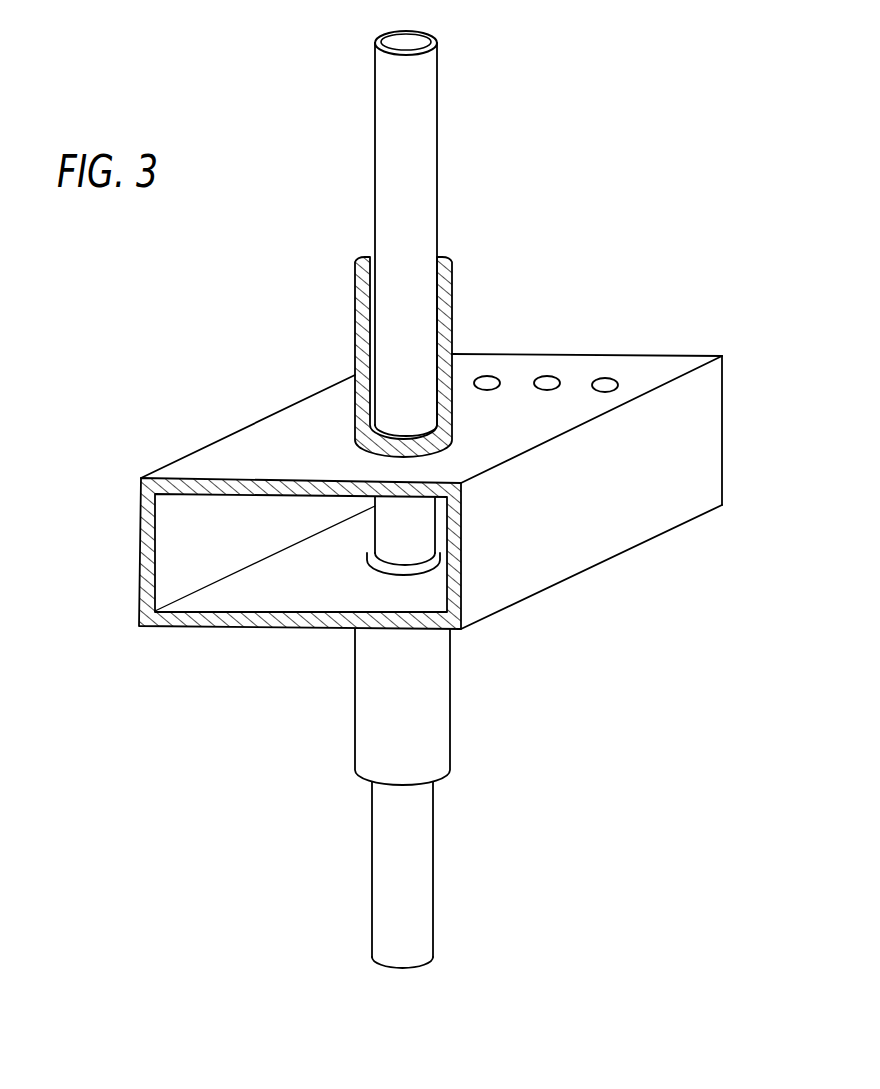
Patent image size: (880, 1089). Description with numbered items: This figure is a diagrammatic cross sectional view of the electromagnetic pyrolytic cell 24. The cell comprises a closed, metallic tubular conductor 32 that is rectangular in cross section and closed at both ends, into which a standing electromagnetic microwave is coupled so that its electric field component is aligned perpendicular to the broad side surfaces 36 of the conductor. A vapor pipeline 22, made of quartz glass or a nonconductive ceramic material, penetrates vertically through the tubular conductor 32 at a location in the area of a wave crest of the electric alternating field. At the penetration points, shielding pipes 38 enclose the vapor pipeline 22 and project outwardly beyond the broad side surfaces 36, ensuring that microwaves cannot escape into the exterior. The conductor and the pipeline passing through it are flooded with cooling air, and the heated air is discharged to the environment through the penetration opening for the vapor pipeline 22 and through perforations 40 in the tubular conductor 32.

The vapor pipeline 22 is at (425, 125).
The electromagnetic pyrolytic cell 24 is at (441, 487).
The tubular conductor 32 is at (665, 484).
The broad side surfaces 36 is at (278, 437).
The shielding pipes 38 is at (452, 284).
The perforations 40 is at (500, 377).